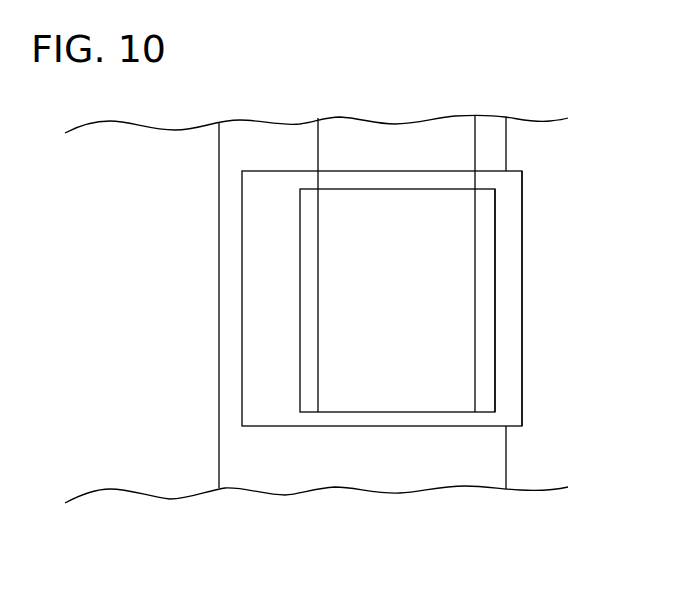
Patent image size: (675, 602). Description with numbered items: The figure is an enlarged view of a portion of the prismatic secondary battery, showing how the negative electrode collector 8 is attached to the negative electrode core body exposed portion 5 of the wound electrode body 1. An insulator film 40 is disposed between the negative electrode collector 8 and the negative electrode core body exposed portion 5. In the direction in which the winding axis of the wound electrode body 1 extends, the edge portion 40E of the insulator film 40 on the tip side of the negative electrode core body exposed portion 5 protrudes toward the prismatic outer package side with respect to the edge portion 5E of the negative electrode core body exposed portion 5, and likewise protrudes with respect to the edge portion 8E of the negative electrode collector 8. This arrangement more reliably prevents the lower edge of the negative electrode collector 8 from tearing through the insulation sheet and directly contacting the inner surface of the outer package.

The wound electrode body 1 is at (150, 473).
The negative electrode core body exposed portion 5 is at (492, 142).
The edge portion of the negative electrode core body exposed portion 5E is at (506, 452).
The negative electrode collector 8 is at (448, 291).
The edge portion of the negative electrode collector 8E is at (495, 357).
The insulator film 40 is at (506, 209).
The edge portion of the insulator film 40E is at (522, 405).